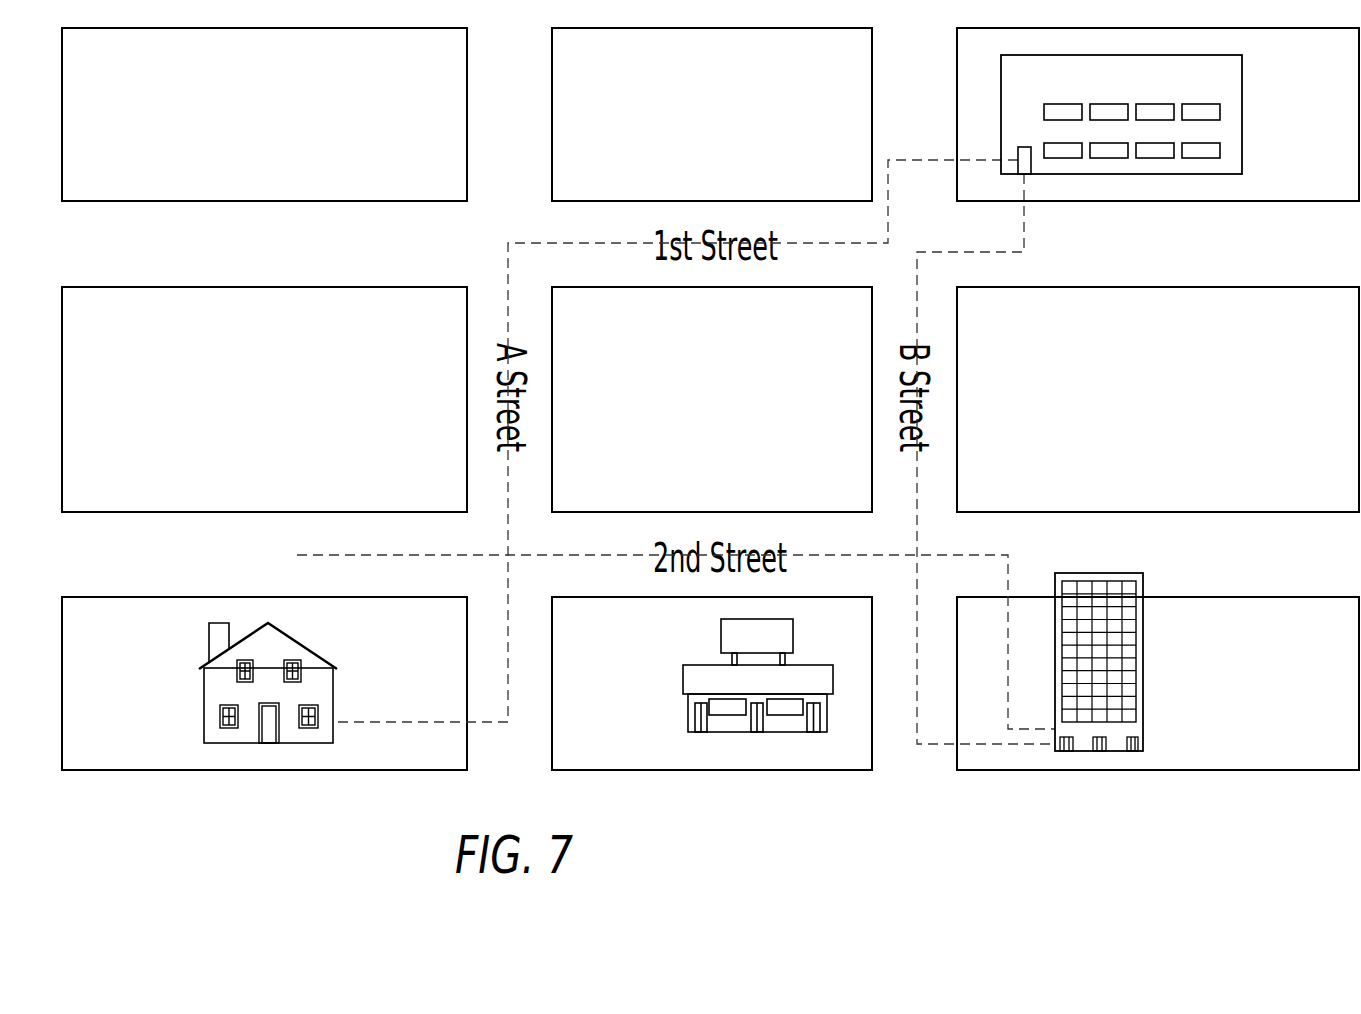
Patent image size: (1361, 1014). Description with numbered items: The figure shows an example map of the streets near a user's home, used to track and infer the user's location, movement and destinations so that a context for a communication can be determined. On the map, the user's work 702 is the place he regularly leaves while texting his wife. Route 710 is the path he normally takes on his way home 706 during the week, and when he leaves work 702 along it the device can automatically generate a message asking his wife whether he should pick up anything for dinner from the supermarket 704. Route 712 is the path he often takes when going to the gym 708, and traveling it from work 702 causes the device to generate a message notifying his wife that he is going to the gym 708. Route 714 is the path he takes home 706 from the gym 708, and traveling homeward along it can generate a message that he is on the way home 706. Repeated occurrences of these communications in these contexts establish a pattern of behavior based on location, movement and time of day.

The work 702 is at (1143, 678).
The supermarket 704 is at (687, 712).
The home 706 is at (204, 704).
The gym 708 is at (1242, 111).
The route 710 is at (1007, 568).
The route 712 is at (999, 743).
The route 714 is at (912, 160).